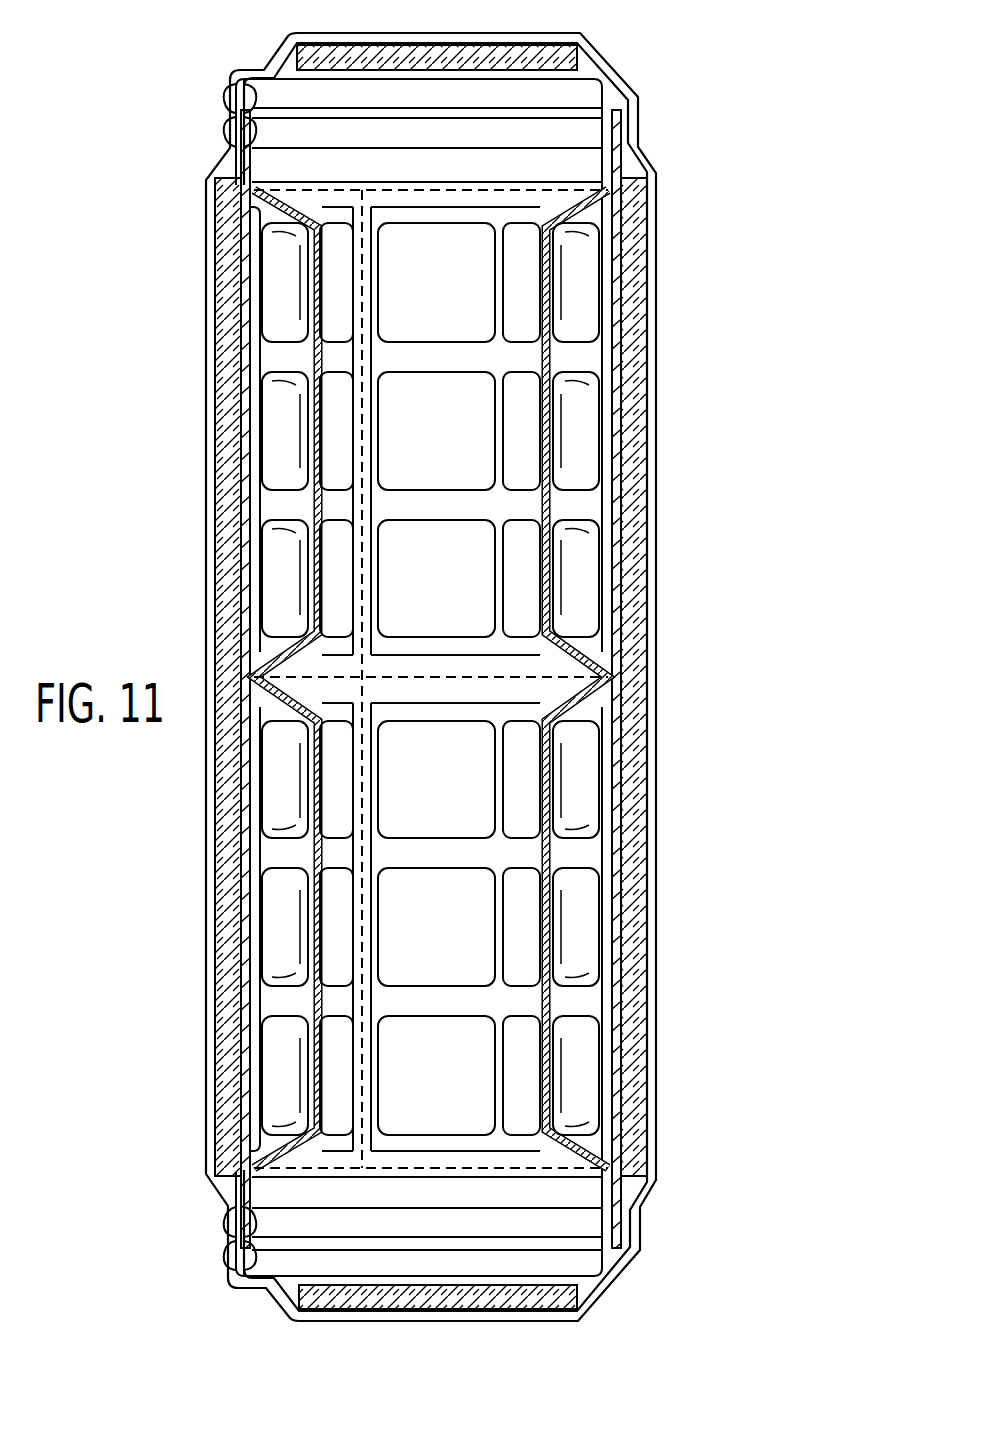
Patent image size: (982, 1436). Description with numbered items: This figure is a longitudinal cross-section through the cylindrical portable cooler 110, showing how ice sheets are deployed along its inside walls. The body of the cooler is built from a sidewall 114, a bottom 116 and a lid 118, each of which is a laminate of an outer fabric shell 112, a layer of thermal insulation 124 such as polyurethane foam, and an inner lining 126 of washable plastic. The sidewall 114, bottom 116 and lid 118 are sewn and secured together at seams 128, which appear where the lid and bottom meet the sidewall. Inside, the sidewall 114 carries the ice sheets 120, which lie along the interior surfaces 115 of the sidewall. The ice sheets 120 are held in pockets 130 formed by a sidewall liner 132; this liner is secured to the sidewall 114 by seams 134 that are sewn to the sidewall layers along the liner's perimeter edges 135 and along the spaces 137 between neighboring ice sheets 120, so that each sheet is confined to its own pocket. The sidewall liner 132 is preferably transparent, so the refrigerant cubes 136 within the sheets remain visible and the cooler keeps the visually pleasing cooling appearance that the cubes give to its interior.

The cooler 110 is at (150, 900).
The outer fabric shell 112 is at (652, 902).
The sidewall 114 is at (196, 241).
The interior surfaces 115 is at (254, 178).
The bottom 116 is at (548, 1322).
The lid 118 is at (505, 34).
The ice sheets 120 is at (268, 404).
The layer of thermal insulation 124 is at (640, 952).
The inner lining 126 is at (617, 1018).
The seams 128 is at (235, 115).
The pockets 130 is at (297, 360).
The sidewall liner 132 is at (540, 270).
The seams 134 is at (347, 188).
The perimeter edges 135 is at (430, 196).
The refrigerant cubes 136 is at (458, 327).
The spaces 137 is at (353, 507).